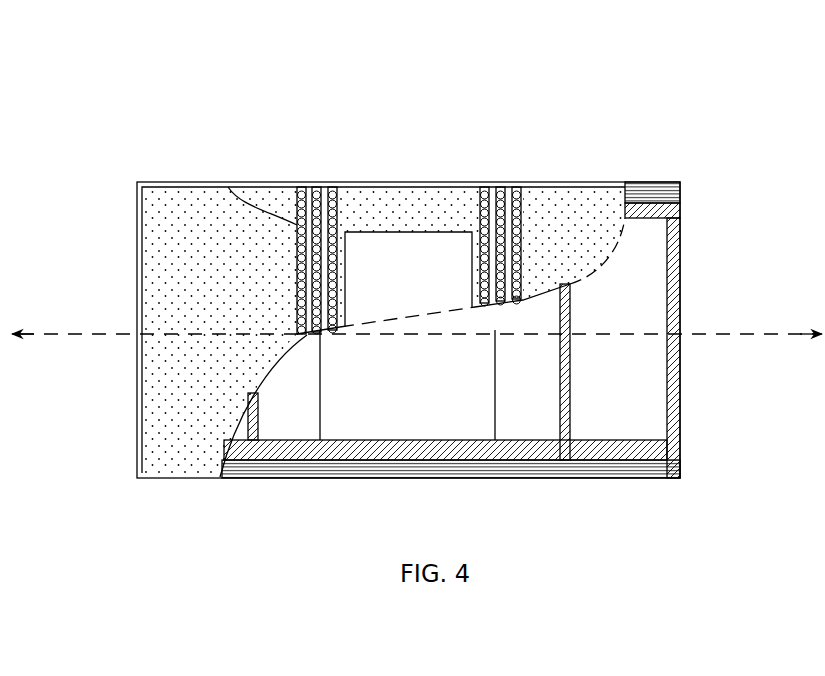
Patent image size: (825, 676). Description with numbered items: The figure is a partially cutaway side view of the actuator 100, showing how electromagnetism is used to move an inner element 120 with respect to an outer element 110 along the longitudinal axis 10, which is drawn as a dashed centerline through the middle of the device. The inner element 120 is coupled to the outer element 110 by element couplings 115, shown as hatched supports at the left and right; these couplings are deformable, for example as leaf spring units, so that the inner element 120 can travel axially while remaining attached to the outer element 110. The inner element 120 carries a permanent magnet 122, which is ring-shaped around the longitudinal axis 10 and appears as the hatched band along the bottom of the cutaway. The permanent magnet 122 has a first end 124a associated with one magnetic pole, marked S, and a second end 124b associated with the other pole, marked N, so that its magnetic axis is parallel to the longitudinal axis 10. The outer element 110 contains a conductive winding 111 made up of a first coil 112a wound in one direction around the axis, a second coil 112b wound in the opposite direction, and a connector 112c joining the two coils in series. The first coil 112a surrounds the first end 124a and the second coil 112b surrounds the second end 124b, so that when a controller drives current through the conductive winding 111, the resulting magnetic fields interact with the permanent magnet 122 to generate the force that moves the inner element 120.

The actuator 100 is at (700, 90).
The longitudinal axis 10 is at (723, 334).
The outer element 110 is at (138, 218).
The conductive winding 111 is at (228, 184).
The first coil 112a is at (315, 183).
The second coil 112b is at (497, 183).
The connector 112c is at (407, 230).
The element couplings 115 is at (250, 462).
The inner element 120 is at (667, 313).
The permanent magnet 122 is at (378, 441).
The first end 124a is at (327, 441).
The second end 124b is at (475, 441).